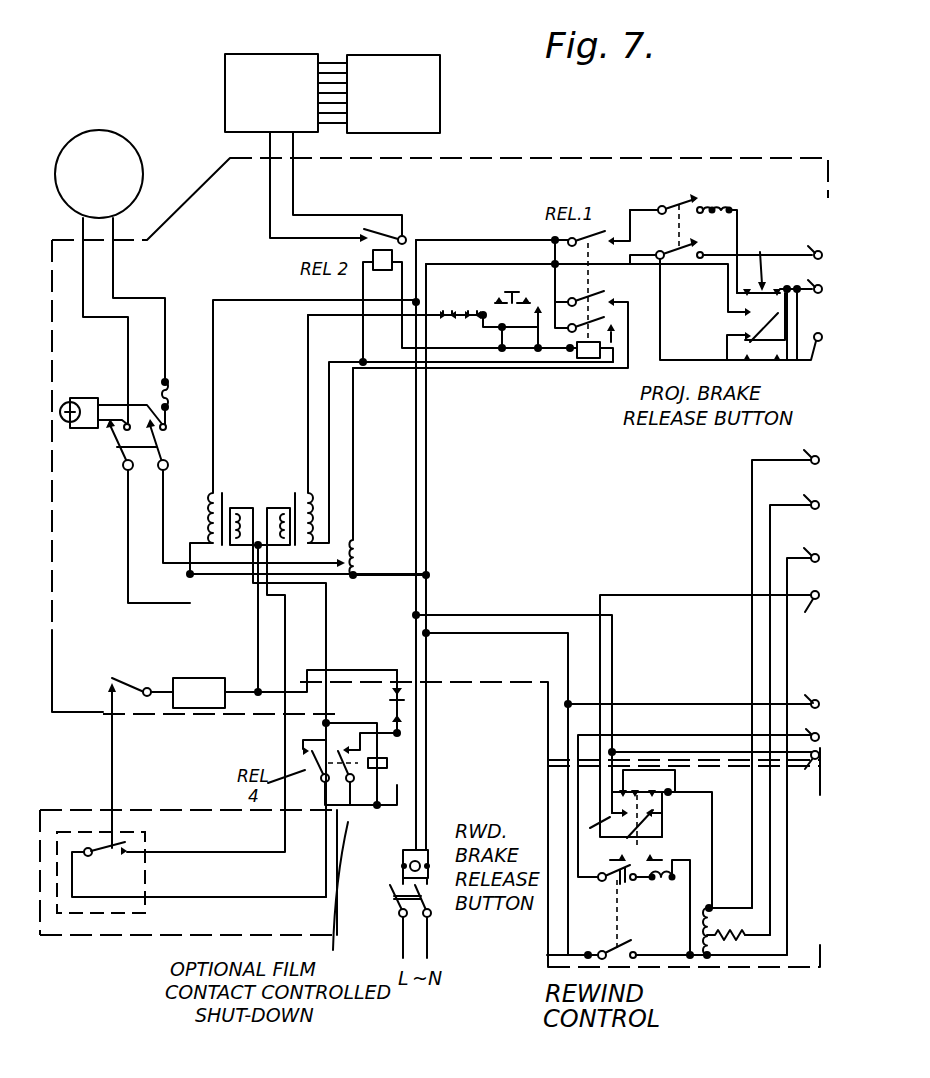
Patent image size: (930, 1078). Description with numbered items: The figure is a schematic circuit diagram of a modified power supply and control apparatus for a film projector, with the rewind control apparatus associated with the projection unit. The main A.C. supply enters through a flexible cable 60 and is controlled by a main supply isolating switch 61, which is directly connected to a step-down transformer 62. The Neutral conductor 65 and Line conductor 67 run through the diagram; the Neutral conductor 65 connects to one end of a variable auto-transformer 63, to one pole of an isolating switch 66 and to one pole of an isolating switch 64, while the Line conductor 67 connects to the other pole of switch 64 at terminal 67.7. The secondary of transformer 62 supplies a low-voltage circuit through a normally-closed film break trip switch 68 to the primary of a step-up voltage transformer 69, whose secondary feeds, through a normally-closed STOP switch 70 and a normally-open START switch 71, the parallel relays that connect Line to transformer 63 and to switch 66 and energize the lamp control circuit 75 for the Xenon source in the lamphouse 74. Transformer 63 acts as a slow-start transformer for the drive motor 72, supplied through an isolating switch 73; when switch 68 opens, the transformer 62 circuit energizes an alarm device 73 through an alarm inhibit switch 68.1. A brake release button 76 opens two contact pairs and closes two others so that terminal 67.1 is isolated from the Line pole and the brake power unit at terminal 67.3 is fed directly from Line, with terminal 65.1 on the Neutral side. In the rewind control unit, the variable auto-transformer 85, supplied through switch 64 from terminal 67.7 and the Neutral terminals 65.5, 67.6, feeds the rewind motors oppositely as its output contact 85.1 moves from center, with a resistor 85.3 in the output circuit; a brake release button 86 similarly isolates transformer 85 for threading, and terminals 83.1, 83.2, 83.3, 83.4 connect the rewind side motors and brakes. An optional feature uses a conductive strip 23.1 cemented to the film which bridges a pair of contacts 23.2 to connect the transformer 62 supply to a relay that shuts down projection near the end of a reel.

The drive motor 72 is at (132, 157).
The lamp control circuit 75 is at (232, 92).
The lamphouse 74 is at (433, 98).
The Line conductor 67 is at (530, 242).
The Neutral conductor 65 is at (528, 266).
The START switch 71 is at (500, 298).
The STOP switch 70 is at (460, 334).
The variable auto-transformer 63 is at (356, 560).
The step-down transformer 62 is at (222, 505).
The step-up voltage transformer 69 is at (295, 505).
The alarm device 73 is at (117, 445).
The alarm inhibit switch 68.1 is at (133, 678).
The film break trip switch 68 is at (148, 878).
The conductive strip 23.1 is at (400, 794).
The pair of contacts 23.2 is at (387, 770).
The main supply isolating switch 61 is at (395, 896).
The flexible cable 60 is at (413, 943).
The isolating switch 66 is at (683, 233).
The brake release button 76 is at (769, 297).
The terminal 65.1 is at (803, 245).
The terminal 67.1 is at (803, 279).
The terminal 67.3 is at (770, 348).
The terminal 83.1 is at (766, 667).
The terminal 83.2 is at (782, 703).
The terminal 83.3 is at (730, 740).
The terminal 83.4 is at (717, 714).
The terminal 65.5 is at (810, 688).
The terminal 67.6 is at (705, 794).
The terminal 67.7 is at (721, 771).
The brake release button 86 is at (636, 788).
The isolating switch 64 is at (618, 921).
The variable auto-transformer 85 is at (704, 941).
The output contact 85.1 is at (710, 911).
The resistor 85.3 is at (732, 941).